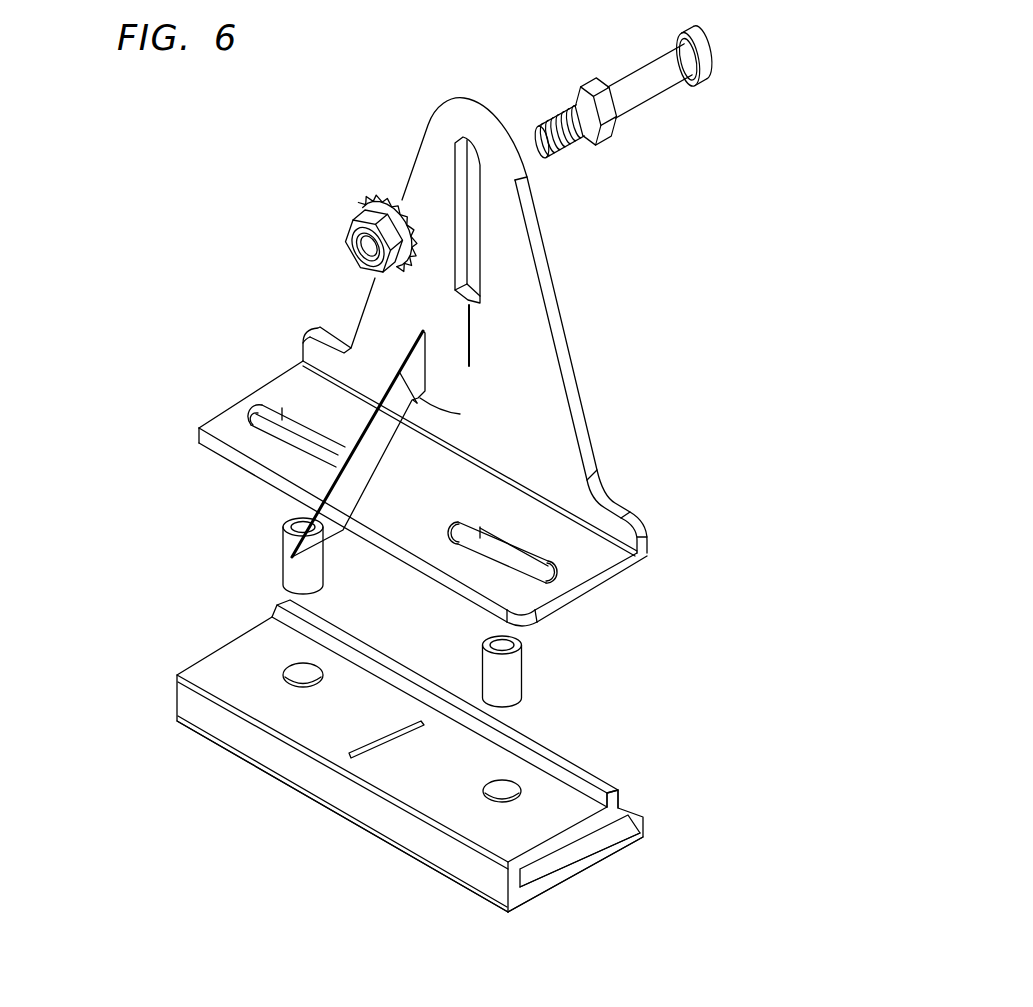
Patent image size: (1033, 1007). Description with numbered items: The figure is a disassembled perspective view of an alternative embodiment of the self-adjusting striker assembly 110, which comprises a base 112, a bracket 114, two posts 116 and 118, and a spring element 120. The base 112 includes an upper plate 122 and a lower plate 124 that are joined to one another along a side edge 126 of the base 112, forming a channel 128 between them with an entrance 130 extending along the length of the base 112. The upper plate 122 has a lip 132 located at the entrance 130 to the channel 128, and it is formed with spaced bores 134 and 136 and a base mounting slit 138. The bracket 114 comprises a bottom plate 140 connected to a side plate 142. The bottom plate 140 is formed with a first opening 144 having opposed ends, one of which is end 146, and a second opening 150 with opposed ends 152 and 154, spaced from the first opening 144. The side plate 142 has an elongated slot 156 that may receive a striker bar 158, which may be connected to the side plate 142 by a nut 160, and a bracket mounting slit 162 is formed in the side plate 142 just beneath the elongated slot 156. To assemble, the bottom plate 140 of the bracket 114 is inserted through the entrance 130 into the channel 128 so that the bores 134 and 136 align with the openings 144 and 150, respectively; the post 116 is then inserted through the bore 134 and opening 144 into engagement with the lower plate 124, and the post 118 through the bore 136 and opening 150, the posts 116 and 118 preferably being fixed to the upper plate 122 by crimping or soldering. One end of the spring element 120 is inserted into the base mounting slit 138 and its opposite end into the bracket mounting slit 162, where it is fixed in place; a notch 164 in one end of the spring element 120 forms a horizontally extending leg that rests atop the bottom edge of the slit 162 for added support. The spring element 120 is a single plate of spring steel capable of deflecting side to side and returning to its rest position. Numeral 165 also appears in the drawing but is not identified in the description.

The self-adjusting striker assembly 110 is at (148, 263).
The base 112 is at (148, 633).
The bracket 114 is at (667, 272).
The post 116 is at (283, 560).
The post 118 is at (522, 672).
The spring element 120 is at (337, 470).
The upper plate 122 is at (443, 800).
The lower plate 124 is at (543, 887).
The side edge 126 is at (283, 763).
The channel 128 is at (573, 847).
The entrance 130 is at (615, 822).
The lip 132 is at (550, 748).
The bore 134 is at (297, 680).
The bore 136 is at (495, 797).
The base mounting slit 138 is at (349, 756).
The bottom plate 140 is at (198, 434).
The side plate 142 is at (565, 324).
The first opening 144 is at (303, 443).
The end 146 is at (270, 403).
The second opening 150 is at (500, 562).
The end 152 is at (452, 553).
The end 154 is at (558, 565).
The elongated slot 156 is at (470, 183).
The striker bar 158 is at (653, 103).
The nut 160 is at (346, 226).
The bracket mounting slit 162 is at (473, 327).
The notch 164 is at (420, 398).
The bend 165 is at (445, 405).